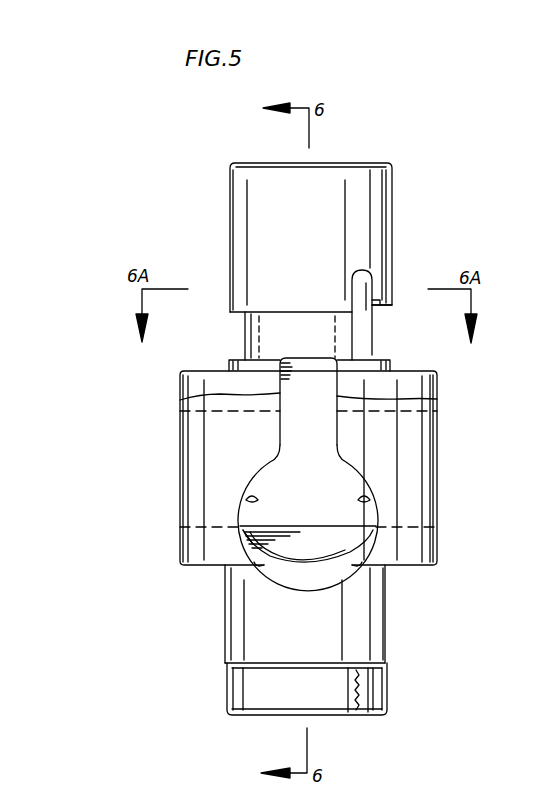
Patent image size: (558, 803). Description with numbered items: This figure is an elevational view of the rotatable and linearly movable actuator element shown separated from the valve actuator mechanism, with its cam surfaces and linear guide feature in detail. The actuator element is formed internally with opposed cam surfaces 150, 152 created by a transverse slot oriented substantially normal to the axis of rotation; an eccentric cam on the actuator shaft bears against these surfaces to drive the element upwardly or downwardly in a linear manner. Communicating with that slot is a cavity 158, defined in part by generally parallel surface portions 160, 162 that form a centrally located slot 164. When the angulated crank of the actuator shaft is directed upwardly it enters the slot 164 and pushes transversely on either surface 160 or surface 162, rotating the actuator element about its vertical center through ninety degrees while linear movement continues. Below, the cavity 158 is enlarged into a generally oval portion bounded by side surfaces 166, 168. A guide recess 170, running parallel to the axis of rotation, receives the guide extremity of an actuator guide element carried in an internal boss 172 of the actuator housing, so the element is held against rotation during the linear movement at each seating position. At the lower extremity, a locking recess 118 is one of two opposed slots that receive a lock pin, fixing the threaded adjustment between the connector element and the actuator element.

The locking recess 118 is at (363, 690).
The cam surface 150 is at (400, 418).
The cam surface 152 is at (400, 516).
The cavity 158 is at (332, 520).
The parallel surface portion 160 is at (200, 396).
The parallel surface portion 162 is at (437, 399).
The slot 164 is at (327, 389).
The side surface 166 is at (246, 500).
The side surface 168 is at (370, 500).
The guide recess 170 is at (372, 296).
The internal boss 172 is at (380, 350).